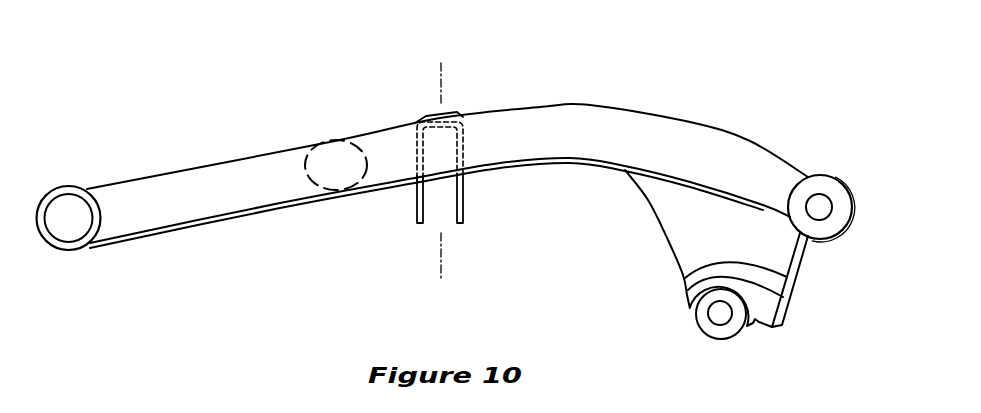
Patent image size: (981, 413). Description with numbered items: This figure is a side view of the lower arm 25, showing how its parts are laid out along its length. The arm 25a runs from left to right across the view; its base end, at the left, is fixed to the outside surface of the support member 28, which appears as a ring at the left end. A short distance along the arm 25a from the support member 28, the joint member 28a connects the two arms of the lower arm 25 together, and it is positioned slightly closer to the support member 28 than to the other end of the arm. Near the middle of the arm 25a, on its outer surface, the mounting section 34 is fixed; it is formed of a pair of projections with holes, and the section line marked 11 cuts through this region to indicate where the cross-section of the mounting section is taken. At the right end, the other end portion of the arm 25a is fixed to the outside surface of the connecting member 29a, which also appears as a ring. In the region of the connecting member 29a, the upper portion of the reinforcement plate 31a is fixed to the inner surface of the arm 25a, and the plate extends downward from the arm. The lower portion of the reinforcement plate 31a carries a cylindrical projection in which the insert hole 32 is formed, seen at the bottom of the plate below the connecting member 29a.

The lower arm 25 is at (695, 71).
The arm 25a is at (736, 140).
The support member 28 is at (65, 188).
The joint member 28a is at (331, 145).
The mounting section 34 is at (412, 205).
The section line 11- 11 is at (442, 63).
The connecting member 29a is at (841, 196).
The reinforcement plate 31a is at (667, 220).
The insert hole 32 is at (713, 316).